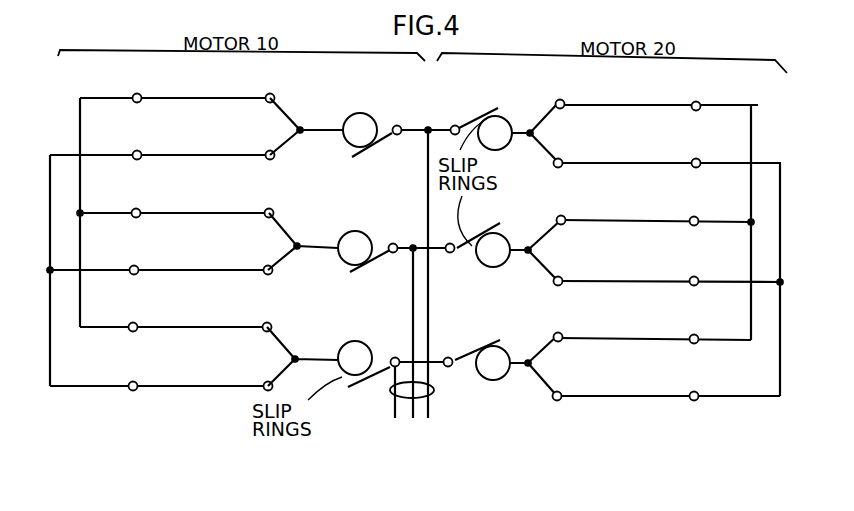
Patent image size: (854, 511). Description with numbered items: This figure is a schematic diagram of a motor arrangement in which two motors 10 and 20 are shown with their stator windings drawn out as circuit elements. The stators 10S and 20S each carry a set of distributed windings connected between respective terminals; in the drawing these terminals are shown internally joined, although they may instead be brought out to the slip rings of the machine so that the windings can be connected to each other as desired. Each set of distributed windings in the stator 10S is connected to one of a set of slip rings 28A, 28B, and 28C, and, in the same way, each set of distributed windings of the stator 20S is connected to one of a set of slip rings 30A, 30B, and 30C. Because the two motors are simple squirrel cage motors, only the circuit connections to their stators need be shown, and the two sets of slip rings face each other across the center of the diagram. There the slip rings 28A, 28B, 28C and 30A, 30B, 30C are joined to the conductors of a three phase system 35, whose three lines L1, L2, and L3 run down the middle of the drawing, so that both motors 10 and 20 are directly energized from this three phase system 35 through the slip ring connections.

The motor 10 is at (290, 96).
The stator 10S is at (197, 92).
The motor 20 is at (538, 92).
The stator 20S is at (608, 100).
The slip ring 28A is at (352, 128).
The slip ring 28B is at (350, 244).
The slip ring 28C is at (352, 352).
The slip ring 30A is at (503, 127).
The slip ring 30B is at (503, 243).
The slip ring 30C is at (503, 352).
The three phase system 35 is at (434, 389).
The supply line L1 is at (393, 407).
The supply line L2 is at (411, 407).
The supply line L3 is at (429, 408).